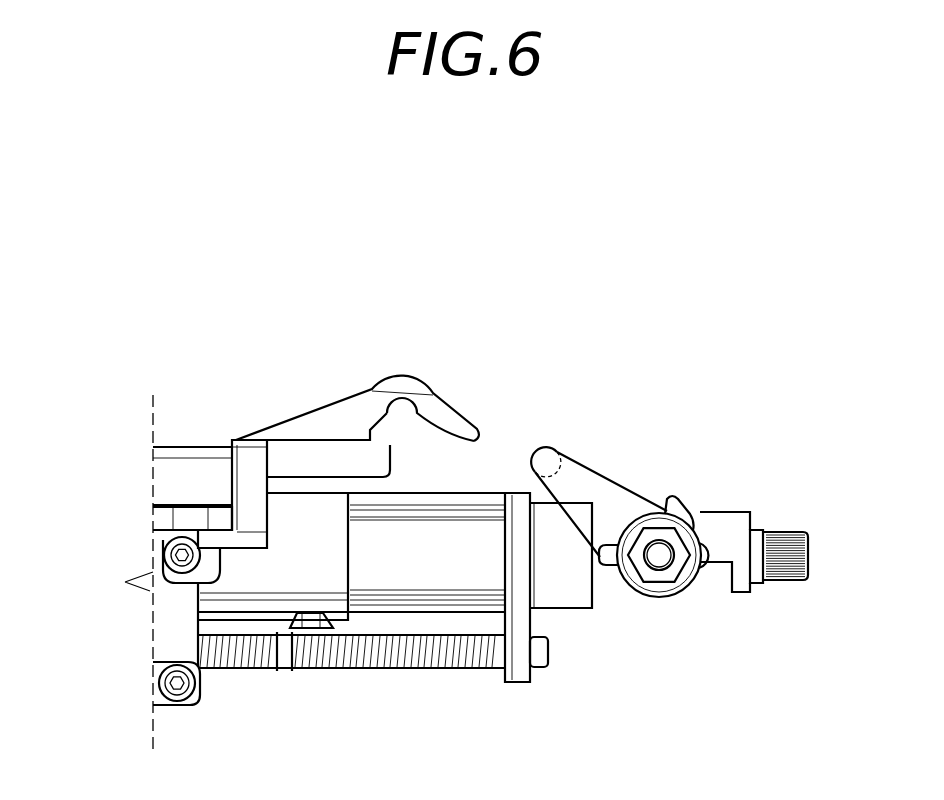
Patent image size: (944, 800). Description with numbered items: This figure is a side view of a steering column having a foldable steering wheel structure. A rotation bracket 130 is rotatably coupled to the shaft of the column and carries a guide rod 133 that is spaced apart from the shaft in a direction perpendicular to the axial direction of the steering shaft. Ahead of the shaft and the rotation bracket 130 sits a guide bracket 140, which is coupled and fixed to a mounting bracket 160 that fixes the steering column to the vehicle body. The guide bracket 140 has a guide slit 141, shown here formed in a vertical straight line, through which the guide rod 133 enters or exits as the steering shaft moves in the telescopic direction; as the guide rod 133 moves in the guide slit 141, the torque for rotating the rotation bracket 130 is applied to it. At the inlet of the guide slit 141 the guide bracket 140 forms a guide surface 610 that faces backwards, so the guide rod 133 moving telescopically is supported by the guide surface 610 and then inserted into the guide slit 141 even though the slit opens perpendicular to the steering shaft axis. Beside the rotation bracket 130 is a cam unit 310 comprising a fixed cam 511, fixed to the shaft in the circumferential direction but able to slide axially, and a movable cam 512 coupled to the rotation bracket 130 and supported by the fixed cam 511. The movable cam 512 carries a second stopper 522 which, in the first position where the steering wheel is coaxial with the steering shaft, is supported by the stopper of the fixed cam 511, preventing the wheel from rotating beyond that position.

The mounting bracket 160 is at (163, 480).
The guide bracket 140 is at (338, 433).
The guide slit 141 is at (398, 414).
The guide surface 610 is at (378, 418).
The guide rod 133 is at (546, 450).
The rotation bracket 130 is at (596, 500).
The fixed cam 511 is at (687, 538).
The movable cam 512 is at (705, 546).
The second stopper 522 is at (601, 557).
The cam unit 310 is at (687, 566).